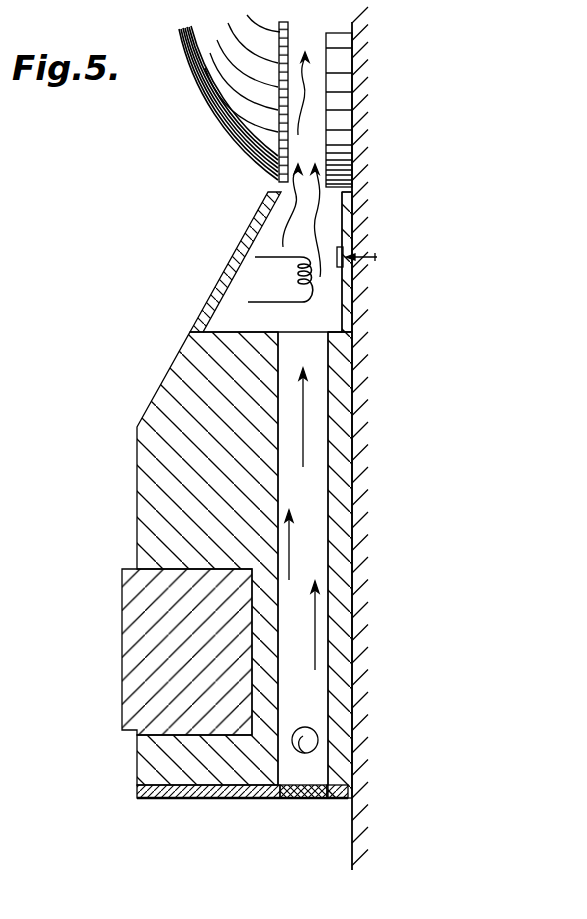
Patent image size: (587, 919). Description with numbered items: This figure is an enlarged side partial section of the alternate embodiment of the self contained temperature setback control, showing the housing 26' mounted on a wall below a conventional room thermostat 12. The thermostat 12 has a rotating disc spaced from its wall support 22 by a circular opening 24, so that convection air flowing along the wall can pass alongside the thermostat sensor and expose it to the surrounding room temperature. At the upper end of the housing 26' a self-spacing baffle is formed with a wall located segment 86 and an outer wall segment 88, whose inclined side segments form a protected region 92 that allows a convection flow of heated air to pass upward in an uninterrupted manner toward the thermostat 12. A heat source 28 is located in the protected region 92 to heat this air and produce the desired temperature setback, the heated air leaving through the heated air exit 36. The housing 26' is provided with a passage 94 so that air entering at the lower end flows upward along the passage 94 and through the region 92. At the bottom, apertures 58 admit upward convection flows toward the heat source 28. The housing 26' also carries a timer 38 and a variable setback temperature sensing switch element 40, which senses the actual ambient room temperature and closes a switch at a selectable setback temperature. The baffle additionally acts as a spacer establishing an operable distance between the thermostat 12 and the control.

The room thermostat 12 is at (247, 117).
The wall support 22 is at (338, 119).
The circular opening 24 is at (318, 148).
The heated air exit 36 is at (303, 196).
The outer wall segment 88 is at (245, 240).
The protected region 92 is at (225, 306).
The heat source 28 is at (297, 277).
The wall located segment 86 is at (348, 238).
The housing 26' is at (182, 558).
The passage 94 is at (303, 494).
The timer 38 is at (132, 620).
The variable setback temperature sensing switch element 40 is at (297, 752).
The apertures 58 is at (320, 800).